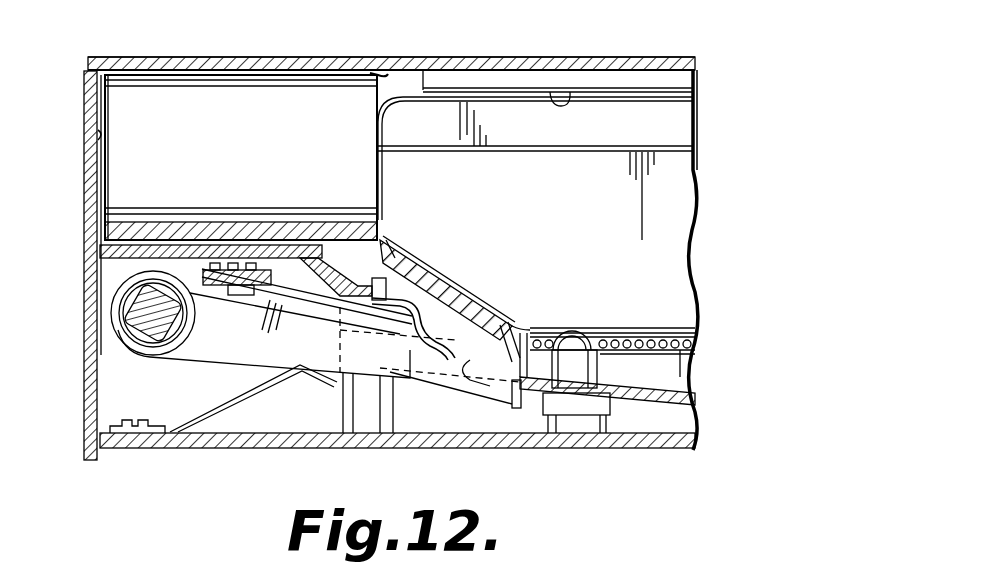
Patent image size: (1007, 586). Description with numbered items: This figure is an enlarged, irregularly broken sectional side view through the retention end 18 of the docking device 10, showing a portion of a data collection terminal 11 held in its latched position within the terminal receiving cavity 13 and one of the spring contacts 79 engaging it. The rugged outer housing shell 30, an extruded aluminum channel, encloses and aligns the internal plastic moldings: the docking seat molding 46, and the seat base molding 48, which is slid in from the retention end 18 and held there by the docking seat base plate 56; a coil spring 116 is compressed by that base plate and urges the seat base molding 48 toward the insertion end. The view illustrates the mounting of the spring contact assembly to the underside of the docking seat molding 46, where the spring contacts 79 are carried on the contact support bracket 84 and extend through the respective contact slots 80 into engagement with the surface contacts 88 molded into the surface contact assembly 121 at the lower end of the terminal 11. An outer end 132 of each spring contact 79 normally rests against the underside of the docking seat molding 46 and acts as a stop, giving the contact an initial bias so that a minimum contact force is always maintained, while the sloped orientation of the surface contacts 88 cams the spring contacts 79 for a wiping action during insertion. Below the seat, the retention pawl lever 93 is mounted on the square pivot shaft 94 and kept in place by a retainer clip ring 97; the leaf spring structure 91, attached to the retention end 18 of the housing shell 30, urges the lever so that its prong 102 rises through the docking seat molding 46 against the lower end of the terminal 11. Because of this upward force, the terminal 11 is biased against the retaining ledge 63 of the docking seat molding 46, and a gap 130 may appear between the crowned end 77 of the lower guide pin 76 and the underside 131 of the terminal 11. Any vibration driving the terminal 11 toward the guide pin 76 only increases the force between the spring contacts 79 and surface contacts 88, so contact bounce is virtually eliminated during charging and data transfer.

The docking device 10 is at (436, 55).
The data collection terminal 11 is at (622, 115).
The terminal receiving cavity 13 is at (534, 370).
The retention end 18 is at (324, 57).
The outer housing shell 30 is at (474, 55).
The docking seat molding 46 is at (96, 233).
The seat base molding 48 is at (401, 57).
The docking seat base plate 56 is at (84, 181).
The retaining ledge 63 is at (569, 95).
The lower guide pin 76 is at (598, 368).
The crowned end 77 is at (589, 339).
The spring contact 79 is at (331, 318).
The contact slot 80 is at (452, 293).
The contact support bracket 84 is at (274, 284).
The surface contact 88 is at (413, 332).
The leaf spring structure 91 is at (178, 410).
The retention pawl lever 93 is at (236, 356).
The square pivot shaft 94 is at (176, 320).
The retainer clip ring 97 is at (126, 296).
The prong 102 is at (505, 321).
The coil spring 116 is at (98, 136).
The surface contact assembly 121 is at (392, 251).
The gap 130 is at (574, 337).
The underside 131 is at (694, 348).
The outer end 132 is at (486, 373).